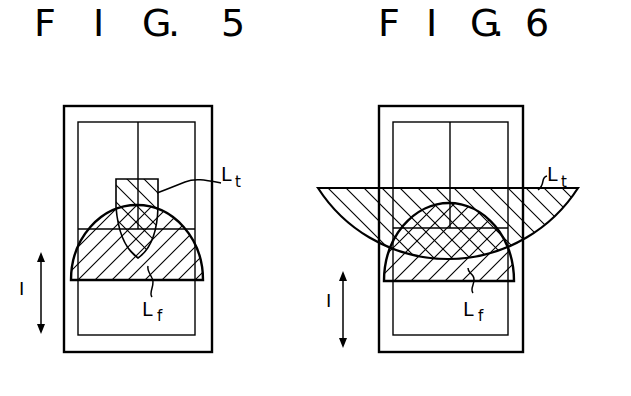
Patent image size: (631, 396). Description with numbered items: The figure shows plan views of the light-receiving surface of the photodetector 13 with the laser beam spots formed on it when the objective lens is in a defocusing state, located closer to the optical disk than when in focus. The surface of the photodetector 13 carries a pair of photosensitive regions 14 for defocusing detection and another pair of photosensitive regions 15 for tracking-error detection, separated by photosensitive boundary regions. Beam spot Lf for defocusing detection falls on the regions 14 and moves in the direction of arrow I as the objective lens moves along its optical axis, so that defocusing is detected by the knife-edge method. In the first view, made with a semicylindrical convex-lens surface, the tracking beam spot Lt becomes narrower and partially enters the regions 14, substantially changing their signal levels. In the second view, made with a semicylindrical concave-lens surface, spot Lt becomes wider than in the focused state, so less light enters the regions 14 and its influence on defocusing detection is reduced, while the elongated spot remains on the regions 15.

In FIG. 5, the photodetector 13 is at (212, 126).
In FIG. 6, the photodetector 13 is at (523, 91).
In FIG. 5, the photosensitive regions for defocusing detection 14 is at (192, 233).
In FIG. 6, the photosensitive regions for defocusing detection 14 is at (500, 270).
In FIG. 5, the photosensitive regions for tracking-error detection 15 is at (127, 136).
In FIG. 6, the photosensitive regions for tracking-error detection 15 is at (463, 133).